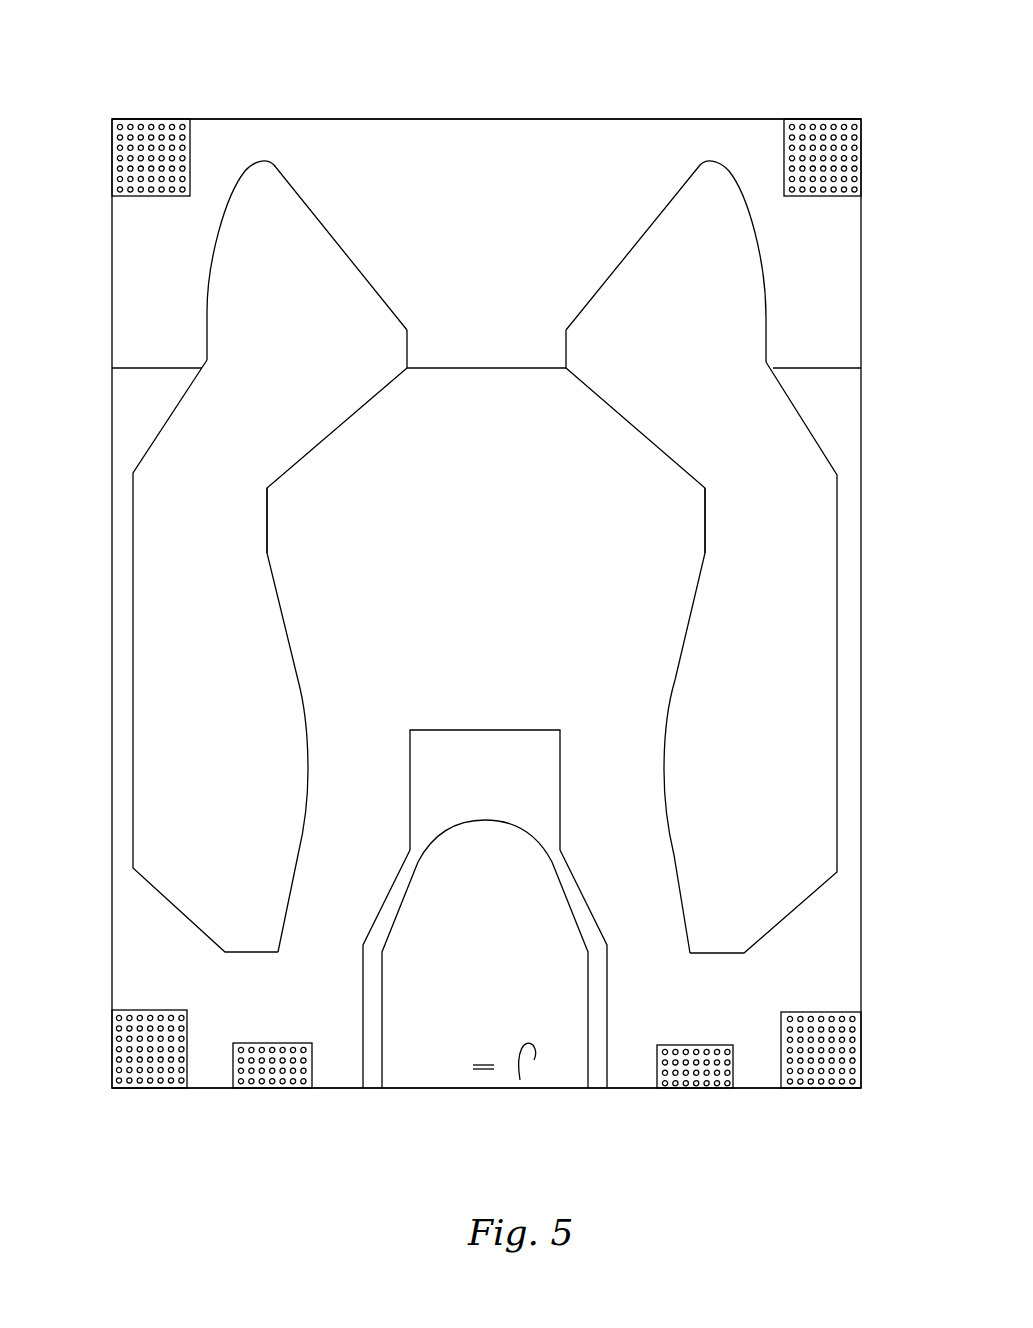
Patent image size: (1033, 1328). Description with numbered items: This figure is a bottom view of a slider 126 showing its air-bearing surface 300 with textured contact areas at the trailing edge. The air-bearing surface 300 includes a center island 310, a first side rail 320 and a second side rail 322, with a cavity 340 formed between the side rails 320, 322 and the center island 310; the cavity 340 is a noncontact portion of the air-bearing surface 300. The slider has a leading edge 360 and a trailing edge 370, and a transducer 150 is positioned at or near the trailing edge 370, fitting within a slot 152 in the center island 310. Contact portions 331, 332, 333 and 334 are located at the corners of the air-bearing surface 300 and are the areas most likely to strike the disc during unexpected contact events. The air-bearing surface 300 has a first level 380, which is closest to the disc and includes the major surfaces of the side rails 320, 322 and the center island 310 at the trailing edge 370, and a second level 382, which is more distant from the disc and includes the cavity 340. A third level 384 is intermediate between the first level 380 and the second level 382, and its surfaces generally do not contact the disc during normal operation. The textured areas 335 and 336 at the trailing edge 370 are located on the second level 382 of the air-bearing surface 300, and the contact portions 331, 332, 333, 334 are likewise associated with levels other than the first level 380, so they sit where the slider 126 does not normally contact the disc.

The slider 126 is at (806, 40).
The transducer 150 is at (487, 1073).
The slot 152 is at (483, 1068).
The air-bearing surface 300 is at (836, 401).
The center island 310 is at (520, 1080).
The first side rail 320 is at (166, 647).
The second side rail 322 is at (818, 651).
The contact portion 331 is at (148, 125).
The contact portion 332 is at (826, 125).
The contact portion 333 is at (818, 1083).
The contact portion 334 is at (153, 1083).
The textured area 335 is at (278, 1083).
The textured area 336 is at (692, 1083).
The cavity 340 is at (663, 534).
The leading edge 360 is at (435, 119).
The trailing edge 370 is at (335, 1090).
The first level 380 is at (260, 425).
The second level 382 is at (315, 537).
The third level 384 is at (500, 315).